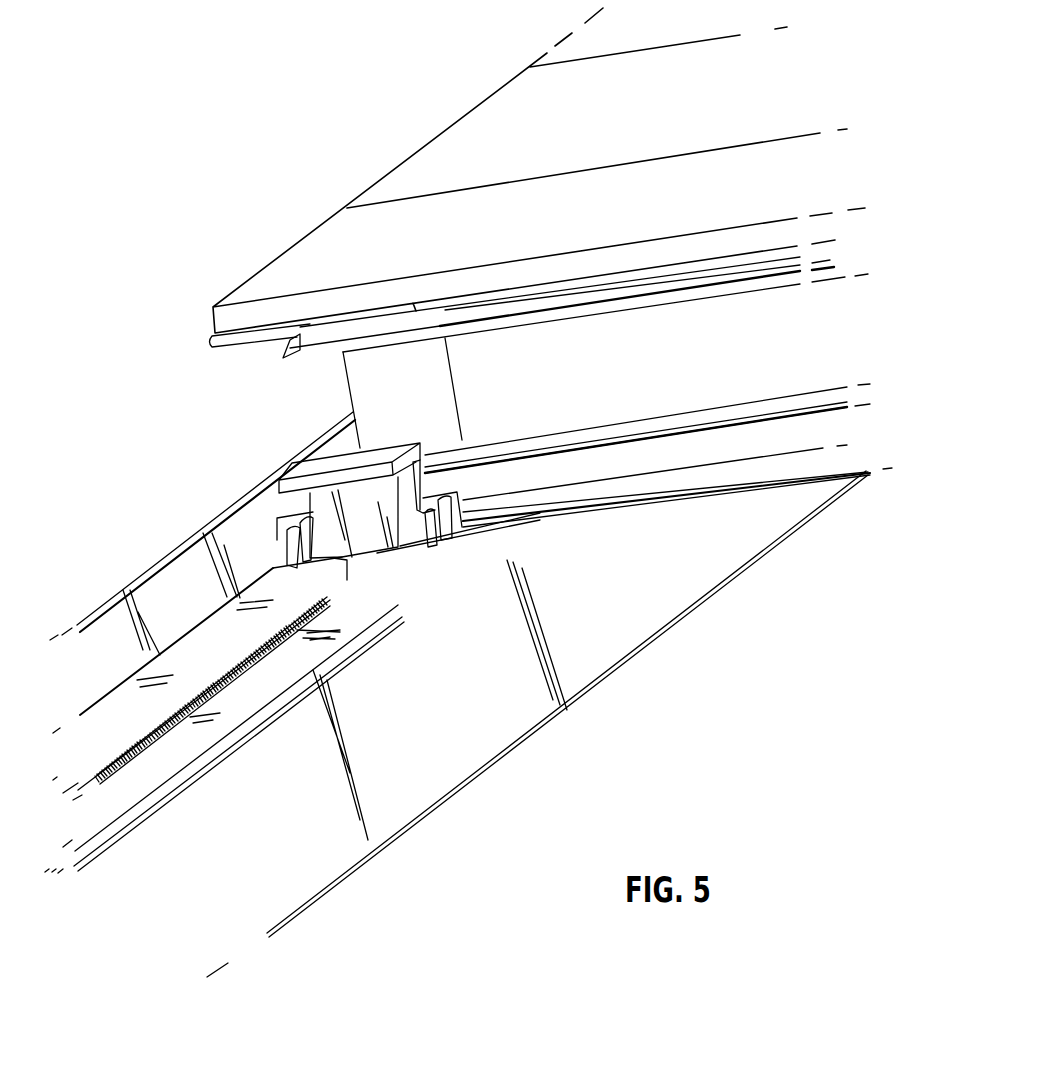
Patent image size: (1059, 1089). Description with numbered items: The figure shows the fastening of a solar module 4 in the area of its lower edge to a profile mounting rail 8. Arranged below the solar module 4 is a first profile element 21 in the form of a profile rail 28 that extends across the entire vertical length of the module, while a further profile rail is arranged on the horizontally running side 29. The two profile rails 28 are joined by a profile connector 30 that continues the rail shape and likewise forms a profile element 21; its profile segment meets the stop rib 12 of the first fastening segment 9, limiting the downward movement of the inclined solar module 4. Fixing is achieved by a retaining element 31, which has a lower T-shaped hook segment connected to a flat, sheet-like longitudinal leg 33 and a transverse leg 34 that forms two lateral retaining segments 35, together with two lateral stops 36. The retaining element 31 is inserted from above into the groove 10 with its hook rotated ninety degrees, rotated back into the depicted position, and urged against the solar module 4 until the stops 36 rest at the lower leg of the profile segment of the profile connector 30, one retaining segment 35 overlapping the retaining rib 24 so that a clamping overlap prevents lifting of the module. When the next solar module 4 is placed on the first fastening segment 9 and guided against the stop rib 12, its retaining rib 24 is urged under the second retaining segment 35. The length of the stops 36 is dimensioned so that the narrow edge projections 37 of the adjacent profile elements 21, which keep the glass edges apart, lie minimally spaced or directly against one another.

The solar module 4 is at (456, 62).
The profile mounting rail 8 is at (430, 783).
The first fastening segment 9 is at (180, 603).
The groove 10 is at (130, 747).
The stop rib 12 is at (193, 552).
The first profile element 21 is at (345, 373).
The retaining rib 24 is at (440, 450).
The profile rail 28 is at (621, 468).
The horizontally running side 29 is at (430, 125).
The profile connector 30 is at (284, 358).
The retaining element 31 is at (428, 483).
The longitudinal leg 33 is at (378, 548).
The transverse leg 34 is at (372, 450).
The retaining segment 35 is at (318, 457).
The stop 36 is at (280, 547).
The edge projection 37 is at (212, 343).